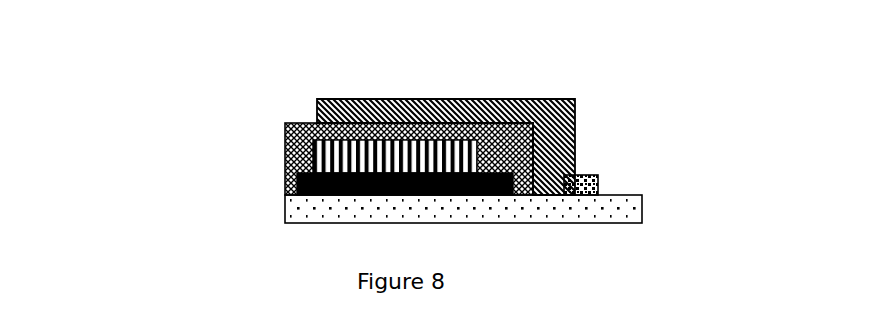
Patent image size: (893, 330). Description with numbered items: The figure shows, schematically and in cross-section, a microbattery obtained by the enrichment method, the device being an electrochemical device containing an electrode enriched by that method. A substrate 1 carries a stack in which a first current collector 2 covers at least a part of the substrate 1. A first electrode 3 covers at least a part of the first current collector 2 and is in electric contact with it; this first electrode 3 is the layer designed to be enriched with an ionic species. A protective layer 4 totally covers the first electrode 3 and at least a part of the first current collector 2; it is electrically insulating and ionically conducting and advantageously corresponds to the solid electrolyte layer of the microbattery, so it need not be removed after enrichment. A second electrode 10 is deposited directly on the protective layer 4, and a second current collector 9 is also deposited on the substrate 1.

The substrate 1 is at (331, 208).
The first current collector 2 is at (300, 184).
The first electrode 3 is at (378, 158).
The protective layer 4 is at (512, 128).
The second current collector 9 is at (596, 178).
The second electrode 10 is at (320, 110).